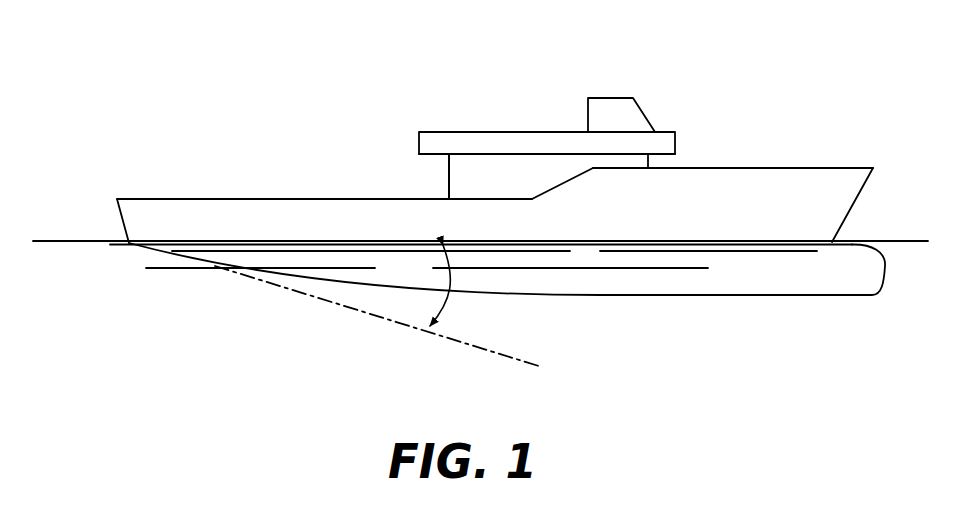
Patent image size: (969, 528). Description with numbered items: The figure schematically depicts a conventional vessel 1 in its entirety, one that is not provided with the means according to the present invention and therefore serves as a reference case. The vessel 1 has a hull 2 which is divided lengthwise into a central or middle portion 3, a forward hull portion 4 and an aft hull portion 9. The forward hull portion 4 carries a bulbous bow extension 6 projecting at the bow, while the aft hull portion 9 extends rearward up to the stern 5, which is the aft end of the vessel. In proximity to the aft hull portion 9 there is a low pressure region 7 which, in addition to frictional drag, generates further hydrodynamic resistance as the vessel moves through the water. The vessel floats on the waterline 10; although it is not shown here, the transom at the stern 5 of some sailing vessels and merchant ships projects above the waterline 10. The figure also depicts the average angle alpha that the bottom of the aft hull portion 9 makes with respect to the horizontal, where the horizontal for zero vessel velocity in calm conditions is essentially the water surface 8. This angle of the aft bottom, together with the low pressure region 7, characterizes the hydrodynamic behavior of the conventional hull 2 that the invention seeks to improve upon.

The conventional vessel 1 is at (404, 78).
The hull 2 is at (407, 220).
The central or middle portion 3 is at (503, 220).
The forward hull portion 4 is at (797, 190).
The stern 5 is at (120, 218).
The bulbous bow extension 6 is at (858, 272).
The low pressure region 7 is at (221, 278).
The water surface 8 is at (72, 240).
The aft hull portion 9 is at (190, 222).
The waterline 10 is at (733, 240).